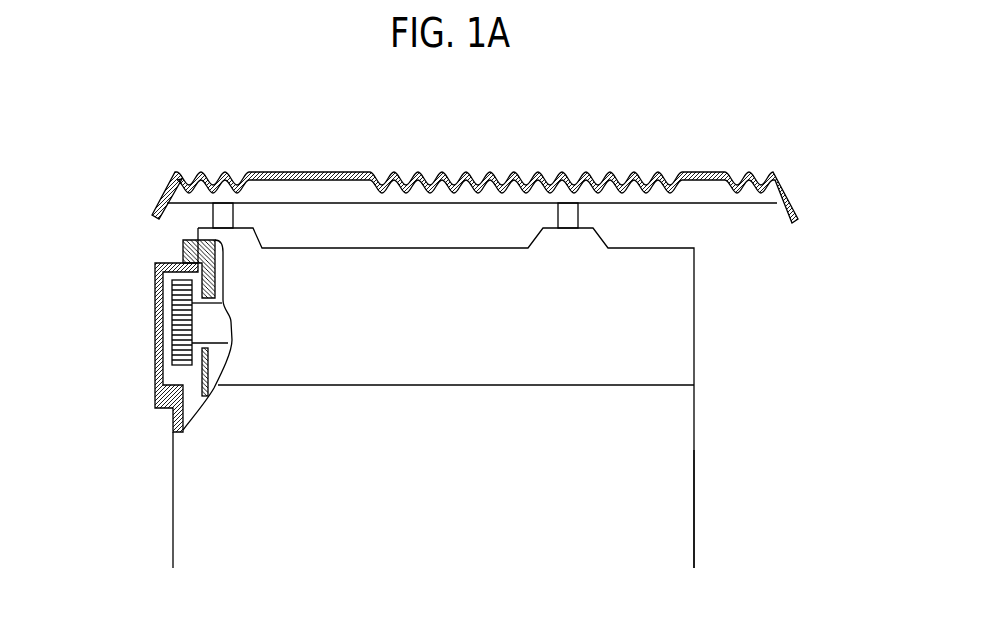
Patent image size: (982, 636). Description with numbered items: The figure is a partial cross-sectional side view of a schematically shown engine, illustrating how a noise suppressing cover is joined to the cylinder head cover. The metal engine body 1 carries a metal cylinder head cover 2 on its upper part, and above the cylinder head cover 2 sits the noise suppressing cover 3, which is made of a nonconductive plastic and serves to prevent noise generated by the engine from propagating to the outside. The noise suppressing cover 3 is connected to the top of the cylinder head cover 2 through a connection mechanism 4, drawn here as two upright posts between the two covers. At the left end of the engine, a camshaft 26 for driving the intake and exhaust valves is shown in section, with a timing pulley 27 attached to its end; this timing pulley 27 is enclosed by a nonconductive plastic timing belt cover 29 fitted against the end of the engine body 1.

The engine body 1 is at (722, 415).
The cylinder head cover 2 is at (668, 322).
The noise suppressing cover 3 is at (693, 173).
The connection mechanism 4 is at (206, 215).
The camshaft 26 is at (210, 327).
The timing pulley 27 is at (182, 344).
The timing belt cover 29 is at (155, 331).